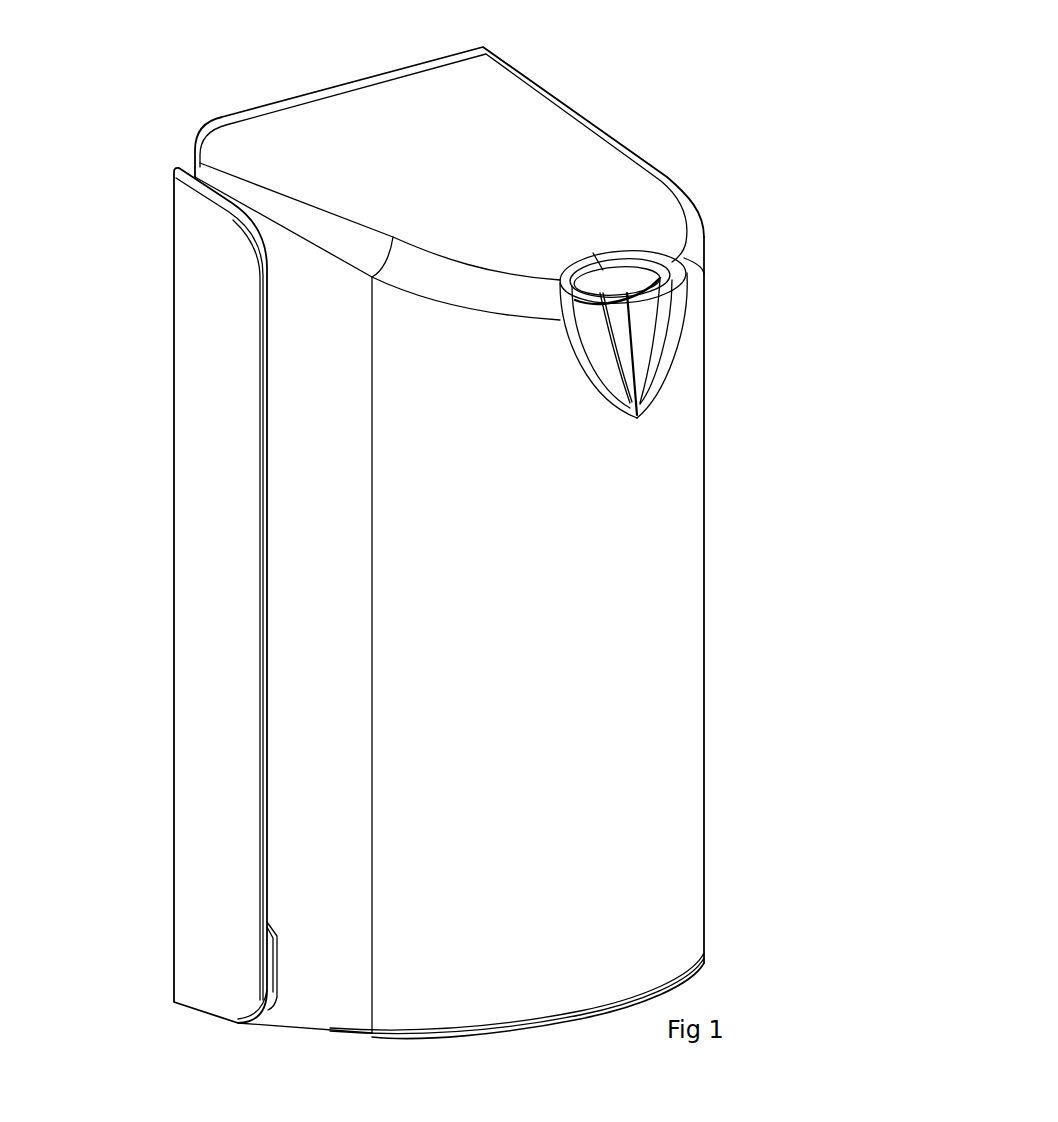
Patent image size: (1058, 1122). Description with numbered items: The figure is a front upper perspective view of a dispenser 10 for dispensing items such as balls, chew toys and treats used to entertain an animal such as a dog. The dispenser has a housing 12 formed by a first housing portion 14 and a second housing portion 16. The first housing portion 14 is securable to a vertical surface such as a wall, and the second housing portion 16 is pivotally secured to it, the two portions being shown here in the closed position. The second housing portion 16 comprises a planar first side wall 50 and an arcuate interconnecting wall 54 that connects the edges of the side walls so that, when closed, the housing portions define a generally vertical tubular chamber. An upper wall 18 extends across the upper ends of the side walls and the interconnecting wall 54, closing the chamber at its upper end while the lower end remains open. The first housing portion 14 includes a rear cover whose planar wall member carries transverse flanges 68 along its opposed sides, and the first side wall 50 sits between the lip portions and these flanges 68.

The dispenser 10 is at (206, 84).
The housing 12 is at (622, 147).
The first housing portion 14 is at (172, 378).
The second housing portion 16 is at (648, 550).
The upper wall 18 is at (418, 173).
The first side wall 50 is at (302, 842).
The interconnecting wall 54 is at (648, 748).
The transverse flanges 68 is at (218, 612).